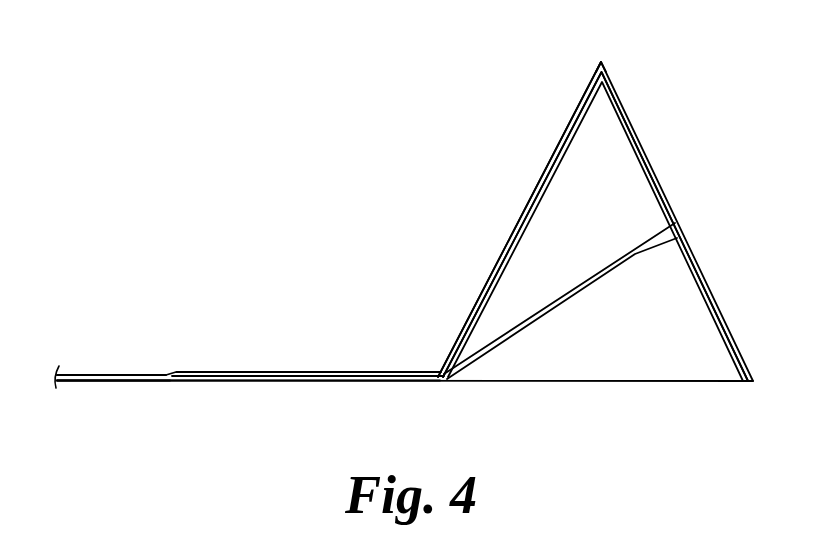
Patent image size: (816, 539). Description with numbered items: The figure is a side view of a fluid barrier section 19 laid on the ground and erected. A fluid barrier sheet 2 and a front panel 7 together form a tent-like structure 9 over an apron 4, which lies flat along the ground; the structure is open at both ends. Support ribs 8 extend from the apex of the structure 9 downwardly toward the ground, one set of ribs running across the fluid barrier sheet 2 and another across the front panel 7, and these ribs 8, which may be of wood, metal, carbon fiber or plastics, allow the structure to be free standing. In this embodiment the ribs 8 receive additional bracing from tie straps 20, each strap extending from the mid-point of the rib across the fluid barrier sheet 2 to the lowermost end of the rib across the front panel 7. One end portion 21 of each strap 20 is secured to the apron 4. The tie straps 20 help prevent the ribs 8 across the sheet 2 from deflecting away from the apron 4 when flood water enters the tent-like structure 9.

The fluid barrier sheet 2 is at (628, 103).
The apron 4 is at (112, 373).
The front panel 7 is at (570, 118).
The ribs 8 is at (650, 185).
The tent-like structure 9 is at (603, 61).
The fluid barrier section 19 is at (323, 193).
The tie straps 20 is at (577, 292).
The end portion 21 is at (328, 381).